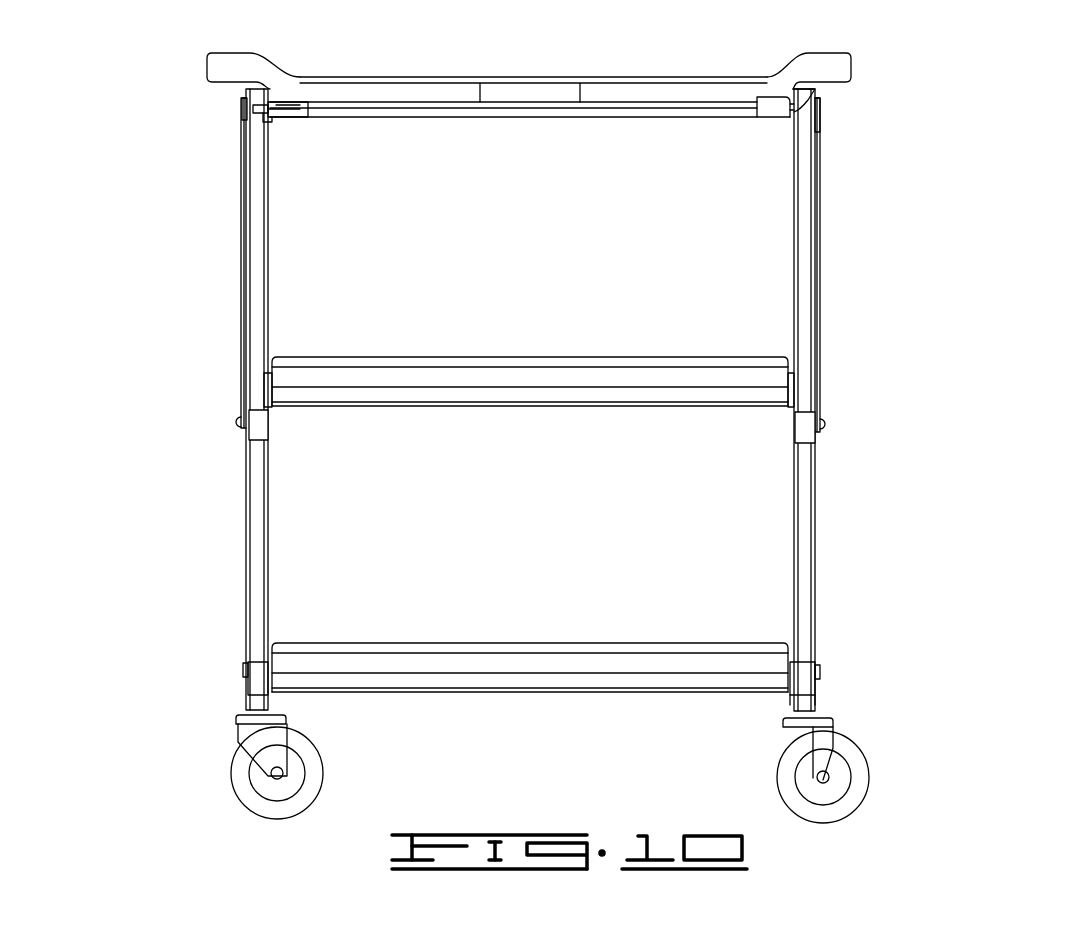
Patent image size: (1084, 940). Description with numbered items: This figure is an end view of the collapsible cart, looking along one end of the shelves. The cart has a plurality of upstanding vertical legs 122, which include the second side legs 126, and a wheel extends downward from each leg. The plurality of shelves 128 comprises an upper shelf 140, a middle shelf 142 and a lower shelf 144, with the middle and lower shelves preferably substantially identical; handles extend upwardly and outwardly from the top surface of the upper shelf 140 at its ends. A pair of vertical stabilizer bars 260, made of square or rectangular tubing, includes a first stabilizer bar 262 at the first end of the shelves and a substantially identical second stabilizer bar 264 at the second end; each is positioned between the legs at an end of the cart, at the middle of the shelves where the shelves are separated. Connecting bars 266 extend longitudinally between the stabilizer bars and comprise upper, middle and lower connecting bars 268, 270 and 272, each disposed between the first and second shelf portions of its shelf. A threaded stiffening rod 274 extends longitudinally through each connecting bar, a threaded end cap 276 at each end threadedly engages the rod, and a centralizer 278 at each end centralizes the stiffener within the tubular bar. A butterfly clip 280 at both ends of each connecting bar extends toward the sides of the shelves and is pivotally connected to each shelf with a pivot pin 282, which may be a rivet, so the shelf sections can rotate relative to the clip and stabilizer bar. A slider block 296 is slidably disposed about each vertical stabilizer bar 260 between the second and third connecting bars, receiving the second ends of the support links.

The legs 122 is at (531, 753).
The second side legs 126 is at (254, 703).
The shelf 128 is at (547, 348).
The upper shelf 140 is at (690, 90).
The middle shelf 142 is at (535, 375).
The lower shelf 144 is at (480, 665).
The vertical stabilizer bars 260 is at (518, 400).
The first stabilizer bar 262 is at (808, 595).
The second stabilizer bar 264 is at (255, 645).
The connecting bars 266 is at (530, 396).
The upper connecting bar 268 is at (345, 106).
The middle connecting bar 270 is at (455, 398).
The lower connecting bar 272 is at (416, 685).
The threaded stiffening rod 274 is at (285, 100).
The threaded end cap 276 is at (243, 110).
The centralizer 278 is at (278, 115).
The butterfly clip 280 is at (790, 668).
The pivot pin 282 is at (795, 90).
The slider block 296 is at (255, 430).